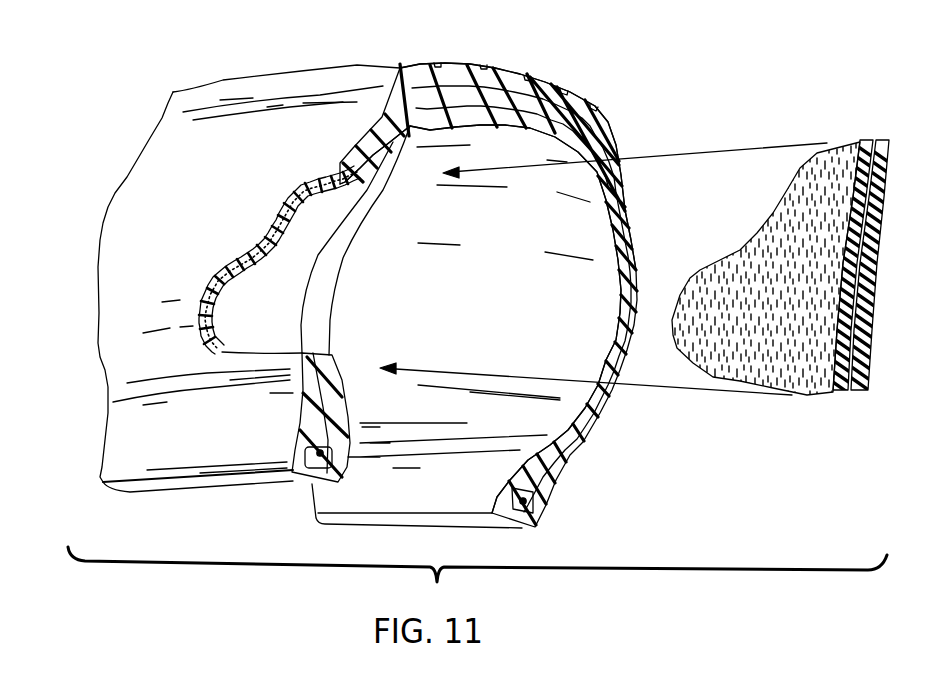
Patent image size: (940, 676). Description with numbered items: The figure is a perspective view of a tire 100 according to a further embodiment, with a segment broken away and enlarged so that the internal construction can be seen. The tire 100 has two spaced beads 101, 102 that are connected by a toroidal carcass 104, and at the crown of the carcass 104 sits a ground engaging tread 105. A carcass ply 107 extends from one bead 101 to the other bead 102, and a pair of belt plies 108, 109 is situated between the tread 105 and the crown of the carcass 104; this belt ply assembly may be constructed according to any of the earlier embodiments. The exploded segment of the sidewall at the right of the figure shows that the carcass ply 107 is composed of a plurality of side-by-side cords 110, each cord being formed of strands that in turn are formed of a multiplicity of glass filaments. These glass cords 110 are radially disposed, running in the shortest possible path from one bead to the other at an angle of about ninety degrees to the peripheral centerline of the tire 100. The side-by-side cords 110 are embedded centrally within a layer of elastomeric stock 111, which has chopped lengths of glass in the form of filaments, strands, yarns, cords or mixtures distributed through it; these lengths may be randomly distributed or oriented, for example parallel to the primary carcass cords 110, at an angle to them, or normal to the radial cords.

The tire 100 is at (203, 213).
The bead 101 is at (324, 452).
The bead 102 is at (516, 497).
The toroidal carcass 104 is at (608, 352).
The ground engaging tread 105 is at (617, 126).
The carcass ply 107 is at (398, 152).
The belt ply 108 is at (518, 100).
The belt ply 109 is at (557, 96).
The cords 110 is at (812, 185).
The elastomeric stock 111 is at (856, 246).